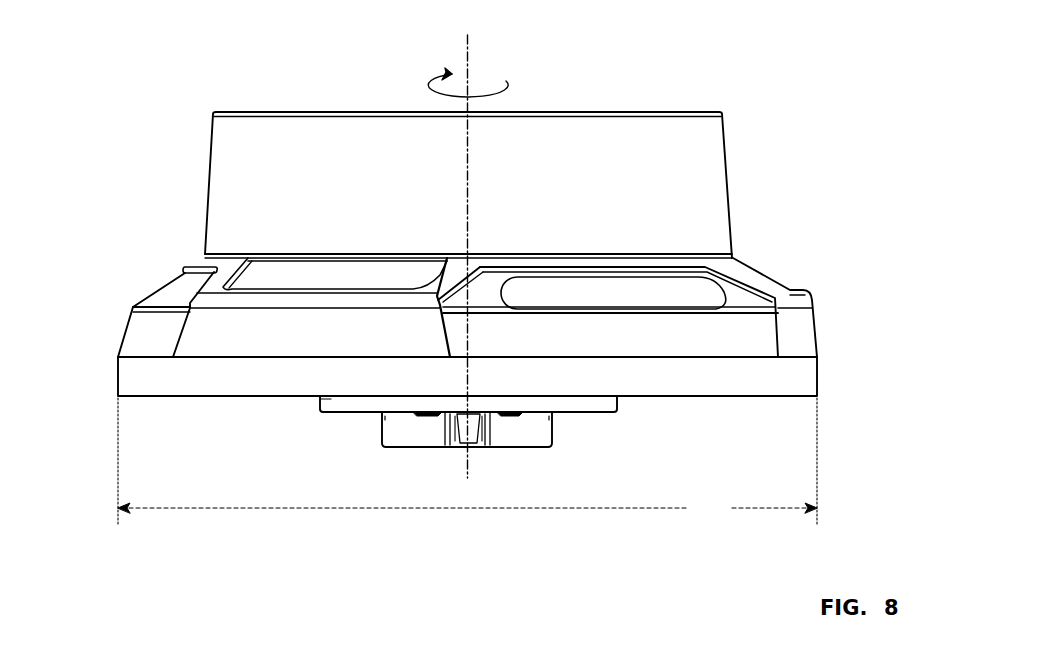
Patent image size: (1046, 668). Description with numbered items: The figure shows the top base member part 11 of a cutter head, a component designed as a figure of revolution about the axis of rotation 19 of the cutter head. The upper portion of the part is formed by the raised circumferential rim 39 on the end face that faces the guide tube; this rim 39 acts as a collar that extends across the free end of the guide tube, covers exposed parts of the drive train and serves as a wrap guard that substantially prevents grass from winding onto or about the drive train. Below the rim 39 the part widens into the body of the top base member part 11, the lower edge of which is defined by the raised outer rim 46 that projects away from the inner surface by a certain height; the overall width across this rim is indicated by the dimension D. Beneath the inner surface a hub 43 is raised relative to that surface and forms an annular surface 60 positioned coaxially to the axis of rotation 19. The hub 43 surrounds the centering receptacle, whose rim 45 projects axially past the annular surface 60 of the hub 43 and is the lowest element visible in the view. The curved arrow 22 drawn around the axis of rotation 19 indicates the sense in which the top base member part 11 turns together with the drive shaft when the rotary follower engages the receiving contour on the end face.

The top base member part 11 is at (182, 290).
The axis of rotation 19 is at (467, 67).
The direction of rotation 22 is at (500, 78).
The circumferential rim 39 is at (303, 157).
The hub 43 is at (328, 403).
The rim 45 is at (540, 433).
The raised outer rim 46 is at (220, 380).
The annular surface 60 is at (332, 412).
The diameter D is at (467, 461).